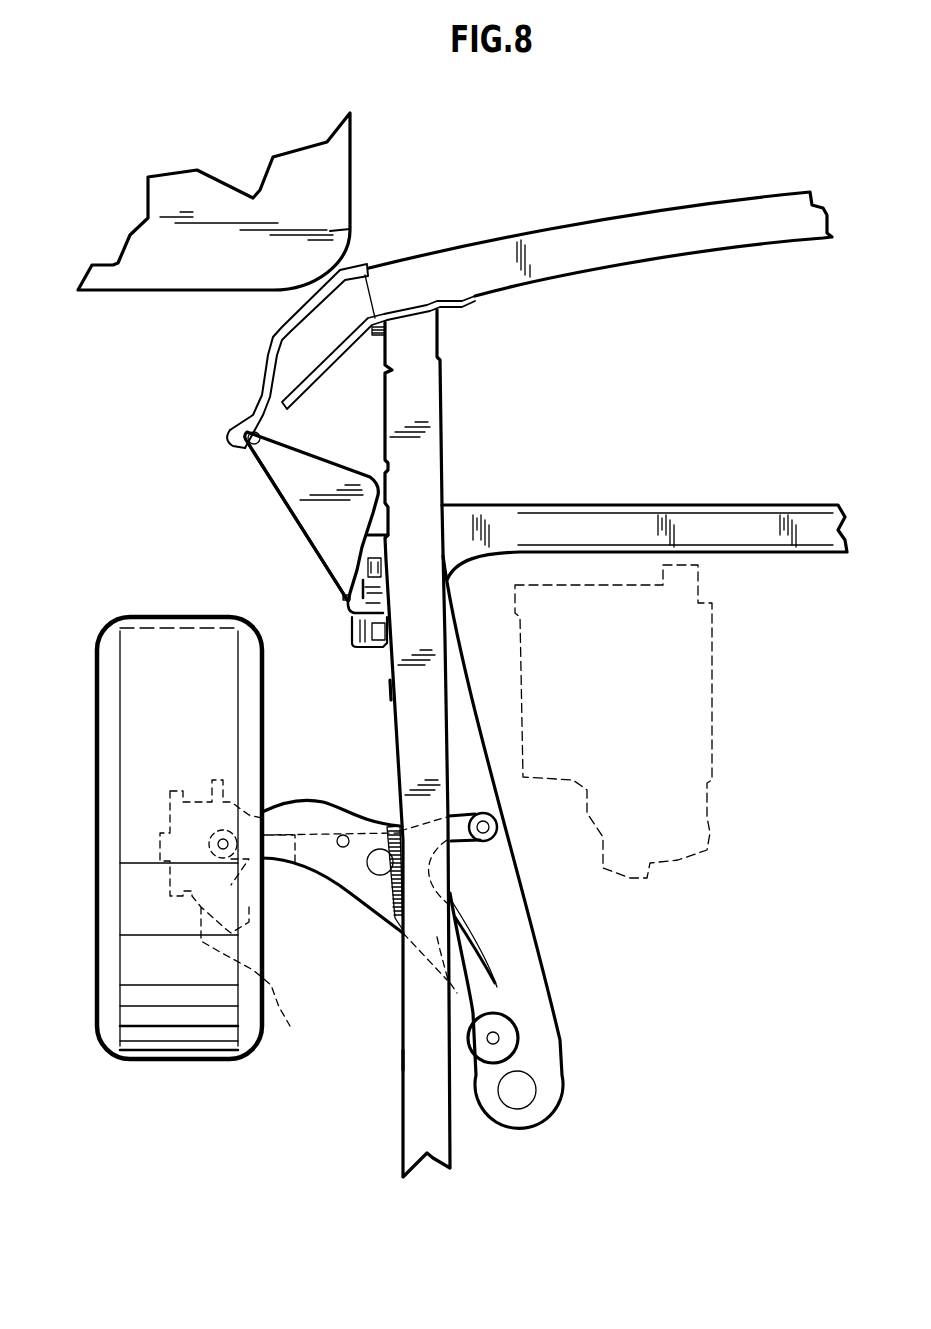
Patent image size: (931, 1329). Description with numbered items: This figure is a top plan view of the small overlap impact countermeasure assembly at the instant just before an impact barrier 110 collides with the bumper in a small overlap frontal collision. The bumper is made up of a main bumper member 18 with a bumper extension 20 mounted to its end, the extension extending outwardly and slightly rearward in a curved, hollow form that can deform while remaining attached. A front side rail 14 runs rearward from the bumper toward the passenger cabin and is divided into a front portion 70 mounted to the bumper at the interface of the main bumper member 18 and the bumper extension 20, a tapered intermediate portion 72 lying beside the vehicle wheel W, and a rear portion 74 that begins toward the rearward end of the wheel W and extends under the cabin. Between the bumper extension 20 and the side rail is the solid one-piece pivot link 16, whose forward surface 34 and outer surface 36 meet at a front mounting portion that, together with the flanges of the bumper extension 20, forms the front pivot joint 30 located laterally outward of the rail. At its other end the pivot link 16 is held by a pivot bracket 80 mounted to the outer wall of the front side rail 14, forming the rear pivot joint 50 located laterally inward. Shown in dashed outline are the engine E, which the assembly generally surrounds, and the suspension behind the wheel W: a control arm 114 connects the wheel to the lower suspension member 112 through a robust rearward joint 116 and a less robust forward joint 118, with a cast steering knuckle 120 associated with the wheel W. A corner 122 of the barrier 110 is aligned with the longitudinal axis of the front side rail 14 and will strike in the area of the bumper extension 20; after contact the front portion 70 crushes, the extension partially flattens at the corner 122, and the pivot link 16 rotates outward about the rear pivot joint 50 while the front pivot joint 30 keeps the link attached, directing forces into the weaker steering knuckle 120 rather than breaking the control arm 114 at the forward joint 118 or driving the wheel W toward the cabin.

The front side rail 14 is at (472, 451).
The pivot link 16 is at (290, 467).
The main bumper member 18 is at (675, 237).
The bumper extension 20 is at (280, 367).
The front pivot joint 30 is at (247, 447).
The forward surface 34 is at (313, 448).
The outer surface 36 is at (302, 520).
The rear pivot joint 50 is at (343, 597).
The front portion 70 is at (427, 397).
The intermediate portion 72 is at (413, 677).
The rear portion 74 is at (427, 1053).
The pivot bracket 80 is at (352, 628).
The impact barrier 110 is at (213, 263).
The lower suspension member 112 is at (513, 975).
The control arm 114 is at (343, 873).
The rearward joint 116 is at (500, 1037).
The forward joint 118 is at (498, 833).
The steering knuckle 120 is at (280, 1010).
The corner 122 is at (330, 231).
The vehicle wheel W is at (177, 704).
The engine E is at (613, 721).